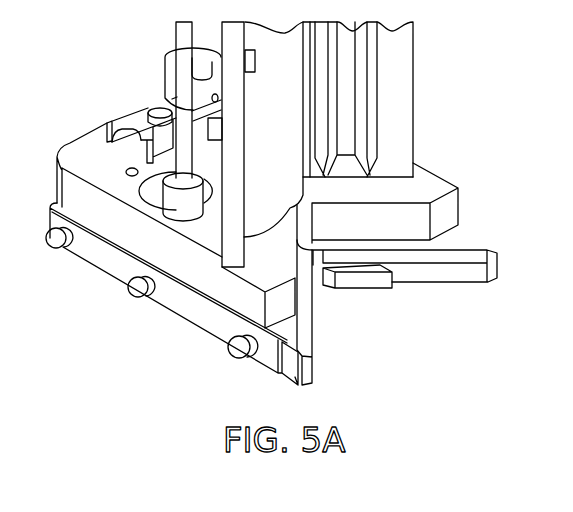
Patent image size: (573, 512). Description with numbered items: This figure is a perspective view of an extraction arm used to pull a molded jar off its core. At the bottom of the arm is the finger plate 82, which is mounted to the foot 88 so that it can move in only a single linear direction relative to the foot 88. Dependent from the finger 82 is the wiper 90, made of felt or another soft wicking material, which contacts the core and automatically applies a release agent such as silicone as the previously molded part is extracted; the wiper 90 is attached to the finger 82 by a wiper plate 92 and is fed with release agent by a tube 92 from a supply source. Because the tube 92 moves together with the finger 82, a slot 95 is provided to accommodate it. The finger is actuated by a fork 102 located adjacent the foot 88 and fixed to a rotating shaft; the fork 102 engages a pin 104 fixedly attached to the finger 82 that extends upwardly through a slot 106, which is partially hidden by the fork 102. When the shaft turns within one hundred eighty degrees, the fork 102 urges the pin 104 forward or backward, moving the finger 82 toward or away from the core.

The finger plate 82 is at (462, 248).
The foot 88 is at (70, 153).
The wiper 90 is at (357, 280).
The tube 92 is at (182, 58).
The slot 95 is at (153, 197).
The fork 102 is at (135, 107).
The pin 104 is at (163, 110).
The slot 106 is at (122, 137).